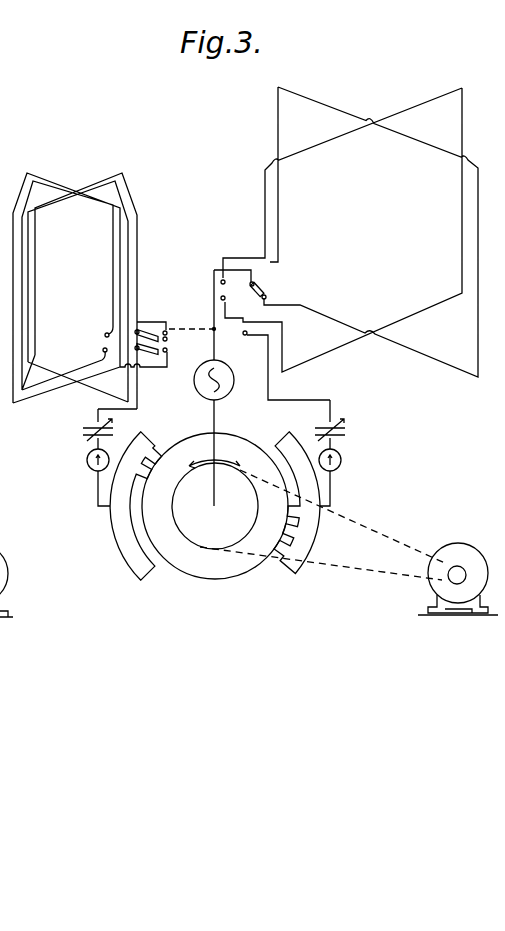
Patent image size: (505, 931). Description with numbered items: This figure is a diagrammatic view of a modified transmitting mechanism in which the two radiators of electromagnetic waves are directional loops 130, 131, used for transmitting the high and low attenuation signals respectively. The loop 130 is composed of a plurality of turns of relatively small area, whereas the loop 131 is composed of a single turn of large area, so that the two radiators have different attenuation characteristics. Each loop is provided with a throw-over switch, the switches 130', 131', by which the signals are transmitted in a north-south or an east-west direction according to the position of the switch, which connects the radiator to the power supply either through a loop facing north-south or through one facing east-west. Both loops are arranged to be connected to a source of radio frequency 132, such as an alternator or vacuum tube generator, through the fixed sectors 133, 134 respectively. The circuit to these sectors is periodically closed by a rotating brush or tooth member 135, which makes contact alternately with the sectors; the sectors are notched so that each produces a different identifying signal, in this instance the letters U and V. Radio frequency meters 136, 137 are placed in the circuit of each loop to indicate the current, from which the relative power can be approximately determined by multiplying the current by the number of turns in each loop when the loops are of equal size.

The directional loop 130 is at (91, 291).
The switch 130' is at (166, 333).
The directional loop 131 is at (350, 232).
The switch 131' is at (272, 333).
The source of radio frequency 132 is at (226, 397).
The fixed sector 133 is at (132, 565).
The fixed sector 134 is at (290, 572).
The rotating brush or tooth member 135 is at (198, 436).
The radio frequency meter 136 is at (90, 457).
The radio frequency meter 137 is at (342, 467).